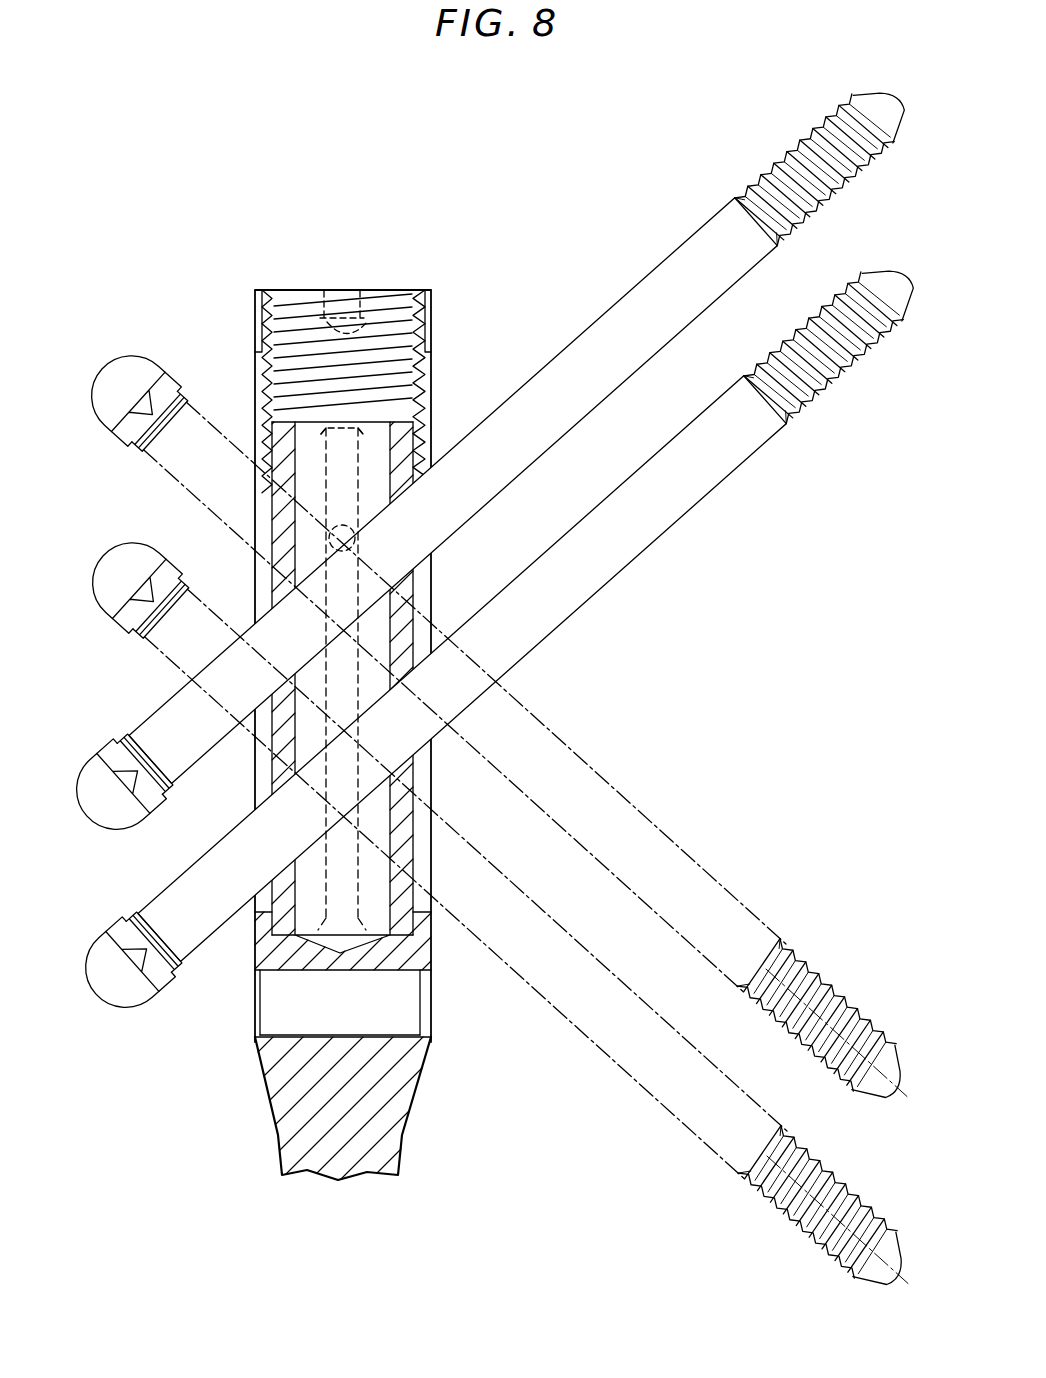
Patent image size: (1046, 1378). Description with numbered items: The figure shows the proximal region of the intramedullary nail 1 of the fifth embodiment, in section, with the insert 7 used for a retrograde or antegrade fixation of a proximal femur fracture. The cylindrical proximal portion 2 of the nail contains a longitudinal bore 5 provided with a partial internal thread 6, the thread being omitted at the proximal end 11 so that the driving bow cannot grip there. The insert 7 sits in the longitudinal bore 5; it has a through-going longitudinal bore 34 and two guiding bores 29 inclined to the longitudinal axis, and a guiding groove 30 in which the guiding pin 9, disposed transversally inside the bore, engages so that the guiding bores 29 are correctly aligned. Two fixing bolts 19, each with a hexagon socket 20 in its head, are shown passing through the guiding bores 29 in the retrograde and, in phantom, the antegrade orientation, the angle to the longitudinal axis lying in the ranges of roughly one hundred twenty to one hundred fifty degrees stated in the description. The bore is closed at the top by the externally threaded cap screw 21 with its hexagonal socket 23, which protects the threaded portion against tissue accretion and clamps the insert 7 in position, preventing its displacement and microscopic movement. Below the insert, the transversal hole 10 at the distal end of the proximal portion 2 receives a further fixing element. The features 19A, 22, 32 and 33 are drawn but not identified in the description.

The nail 1 is at (703, 748).
The proximal portion 2 is at (249, 789).
The longitudinal bore 5 is at (392, 943).
The partial internal thread 6 is at (427, 323).
The insert 7 is at (270, 518).
The guiding pin 9 is at (348, 525).
The transversal hole 10 is at (282, 1008).
The proximal end 11 is at (257, 290).
The fixing bolt 19 is at (647, 292).
The threaded rod end 19A is at (805, 150).
The hexagon socket 20 is at (98, 815).
The cap screw 21 is at (393, 305).
The set screw 22 is at (418, 300).
The hexagonal socket 23 is at (355, 297).
The guiding bore 29 is at (392, 592).
The guiding groove 30 is at (337, 465).
The groove 32 is at (420, 990).
The shoulder 33 is at (410, 408).
The through-going longitudinal bore 34 is at (258, 968).